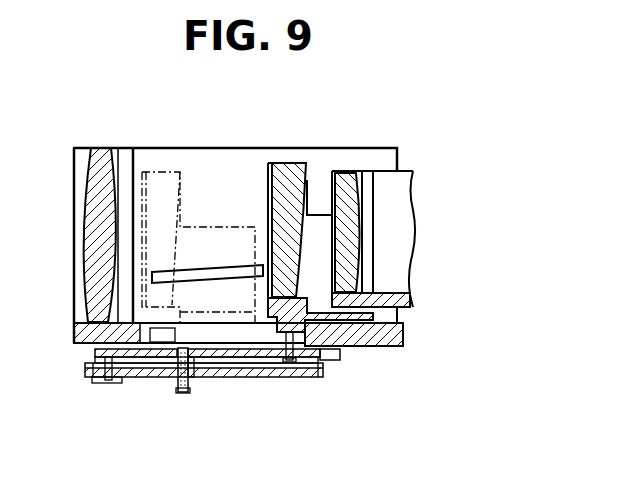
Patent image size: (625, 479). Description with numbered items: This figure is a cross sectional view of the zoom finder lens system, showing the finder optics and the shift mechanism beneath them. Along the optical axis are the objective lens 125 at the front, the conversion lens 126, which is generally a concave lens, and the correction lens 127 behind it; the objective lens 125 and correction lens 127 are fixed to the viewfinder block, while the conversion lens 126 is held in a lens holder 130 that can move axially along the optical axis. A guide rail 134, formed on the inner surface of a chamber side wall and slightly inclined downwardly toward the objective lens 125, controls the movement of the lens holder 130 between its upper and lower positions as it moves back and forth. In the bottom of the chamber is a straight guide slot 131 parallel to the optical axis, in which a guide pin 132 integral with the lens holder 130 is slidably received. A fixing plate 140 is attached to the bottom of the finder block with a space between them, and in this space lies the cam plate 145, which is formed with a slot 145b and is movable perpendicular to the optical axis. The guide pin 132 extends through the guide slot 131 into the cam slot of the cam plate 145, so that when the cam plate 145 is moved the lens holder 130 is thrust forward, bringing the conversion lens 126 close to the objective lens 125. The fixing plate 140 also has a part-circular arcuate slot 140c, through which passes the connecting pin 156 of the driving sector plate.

The objective lens 125 is at (108, 149).
The conversion lens 126 is at (283, 168).
The correction lens 127 is at (352, 180).
The lens holder 130 is at (312, 183).
The guide slot 131 is at (268, 338).
The guide pin 132 is at (343, 158).
The guide rail 134 is at (230, 270).
The fixing plate 140 is at (323, 375).
The part-circular arcuate slot 140c is at (192, 376).
The cam plate 145 is at (343, 355).
The slot 145b is at (227, 378).
The connecting pin 156 is at (177, 390).